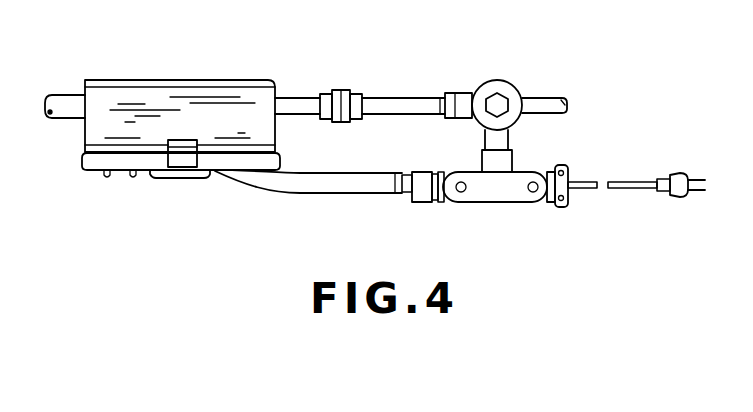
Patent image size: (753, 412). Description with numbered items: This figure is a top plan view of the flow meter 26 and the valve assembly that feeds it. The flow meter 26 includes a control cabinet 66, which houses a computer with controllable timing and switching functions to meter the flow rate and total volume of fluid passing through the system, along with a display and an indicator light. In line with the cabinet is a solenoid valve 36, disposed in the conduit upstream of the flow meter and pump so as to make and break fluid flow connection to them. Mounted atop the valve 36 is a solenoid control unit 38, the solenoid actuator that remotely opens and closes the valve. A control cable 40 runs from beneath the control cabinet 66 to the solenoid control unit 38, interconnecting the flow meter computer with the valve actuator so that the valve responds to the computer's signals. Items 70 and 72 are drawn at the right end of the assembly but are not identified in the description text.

The flow meter 26 is at (262, 74).
The control cabinet 66 is at (185, 87).
The solenoid valve 36 is at (494, 100).
The solenoid control unit 38 is at (500, 184).
The control cable 40 is at (320, 185).
The probe 70 is at (583, 180).
The electrical plug 72 is at (677, 180).